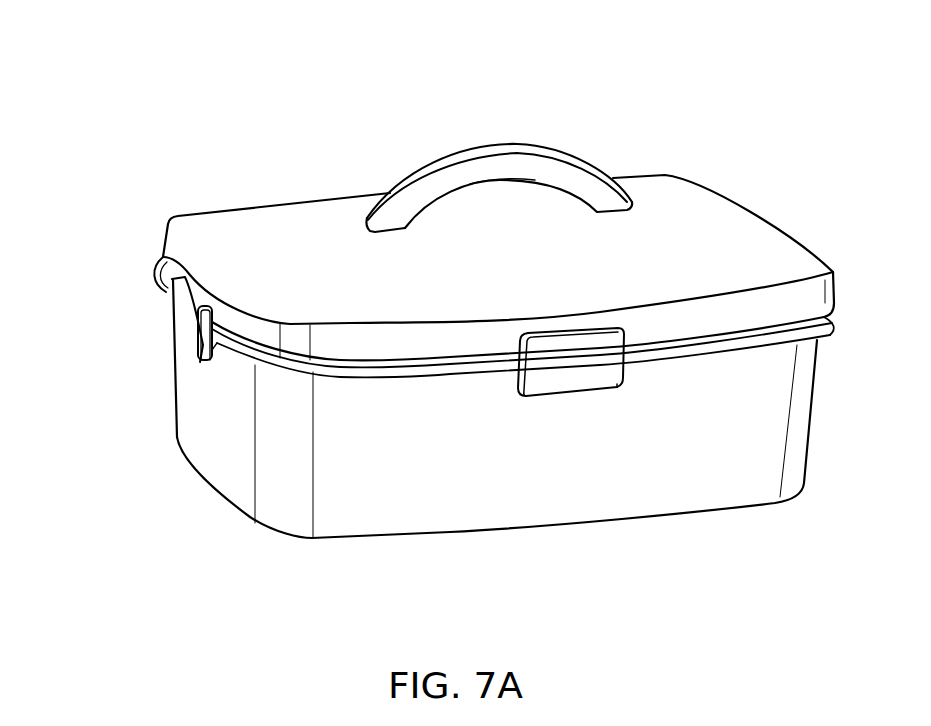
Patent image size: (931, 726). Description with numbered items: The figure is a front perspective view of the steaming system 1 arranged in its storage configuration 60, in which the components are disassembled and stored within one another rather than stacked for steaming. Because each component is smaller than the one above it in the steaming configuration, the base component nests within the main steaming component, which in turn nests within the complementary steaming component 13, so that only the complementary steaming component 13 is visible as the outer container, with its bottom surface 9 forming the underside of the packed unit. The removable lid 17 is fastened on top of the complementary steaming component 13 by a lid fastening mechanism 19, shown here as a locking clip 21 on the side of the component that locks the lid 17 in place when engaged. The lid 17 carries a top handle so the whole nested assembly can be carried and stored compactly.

The steaming system 1 is at (712, 48).
The storage configuration of the steaming system 60 is at (697, 146).
The removable lid 17 is at (253, 230).
The lid fastening mechanism 19 is at (180, 322).
The locking clip 21 is at (207, 333).
The bottom surface of steaming component 9 is at (274, 560).
The complementary steaming component 13 is at (735, 465).